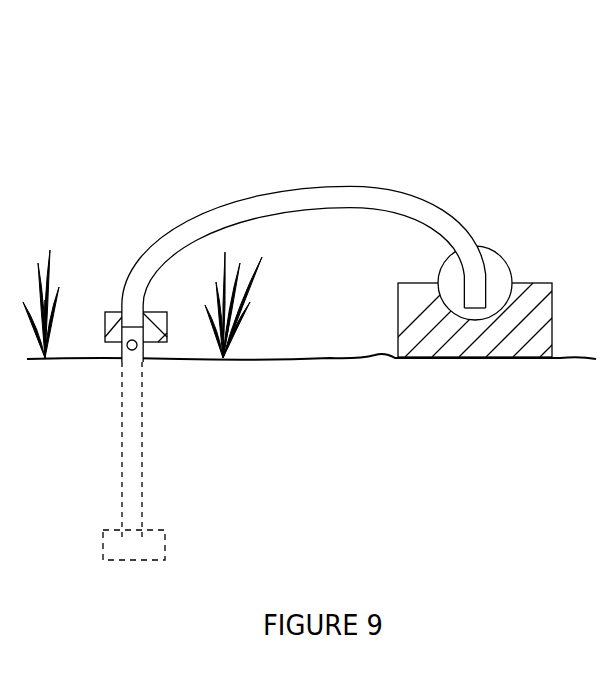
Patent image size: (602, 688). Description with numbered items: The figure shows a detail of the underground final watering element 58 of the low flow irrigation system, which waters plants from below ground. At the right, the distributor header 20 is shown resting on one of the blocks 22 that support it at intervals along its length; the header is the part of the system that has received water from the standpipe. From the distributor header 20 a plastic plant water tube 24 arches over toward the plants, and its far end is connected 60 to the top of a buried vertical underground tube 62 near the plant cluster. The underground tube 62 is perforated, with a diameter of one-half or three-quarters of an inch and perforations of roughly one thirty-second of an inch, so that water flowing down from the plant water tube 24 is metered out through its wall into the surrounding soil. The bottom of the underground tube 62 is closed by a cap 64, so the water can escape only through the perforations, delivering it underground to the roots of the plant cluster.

The underground final watering element 58 is at (326, 68).
The plant water tube 24 is at (345, 188).
The distributor header 20 is at (498, 257).
The block 22 is at (413, 357).
The connection 60 is at (168, 337).
The underground tube 62 is at (140, 457).
The cap 64 is at (160, 547).